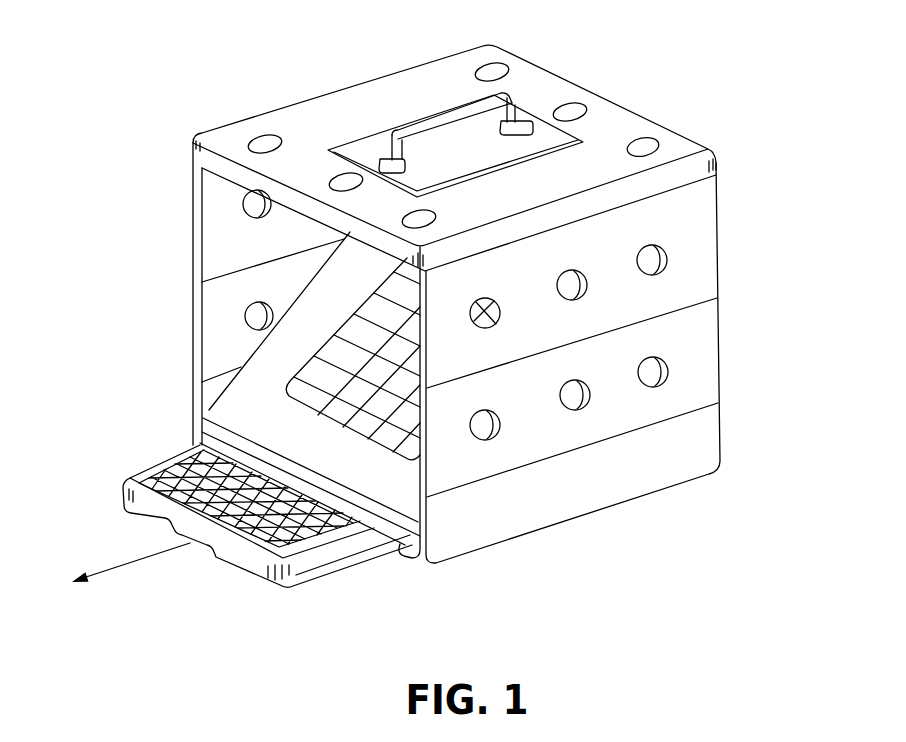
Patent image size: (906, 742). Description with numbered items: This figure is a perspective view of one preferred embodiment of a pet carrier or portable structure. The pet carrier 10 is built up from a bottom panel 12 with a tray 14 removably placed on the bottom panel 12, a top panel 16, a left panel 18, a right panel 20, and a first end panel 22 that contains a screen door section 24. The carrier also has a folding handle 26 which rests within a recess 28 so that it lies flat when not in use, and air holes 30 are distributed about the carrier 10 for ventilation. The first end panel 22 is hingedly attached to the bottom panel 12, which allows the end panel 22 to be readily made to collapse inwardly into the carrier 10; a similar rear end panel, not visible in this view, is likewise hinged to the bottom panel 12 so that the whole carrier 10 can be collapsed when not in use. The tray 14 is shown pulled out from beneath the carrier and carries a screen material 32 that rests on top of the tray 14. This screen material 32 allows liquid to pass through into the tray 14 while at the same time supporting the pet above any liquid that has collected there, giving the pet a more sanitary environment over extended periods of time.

The pet carrier 10 is at (615, 56).
The bottom panel 12 is at (700, 447).
The tray 14 is at (258, 572).
The top panel 16 is at (322, 128).
The left panel 18 is at (192, 222).
The right panel 20 is at (697, 199).
The first end panel 22 is at (243, 415).
The screen door section 24 is at (342, 375).
The folding handle 26 is at (433, 124).
The recess 28 is at (535, 145).
The air holes 30 is at (650, 261).
The screen material 32 is at (328, 535).